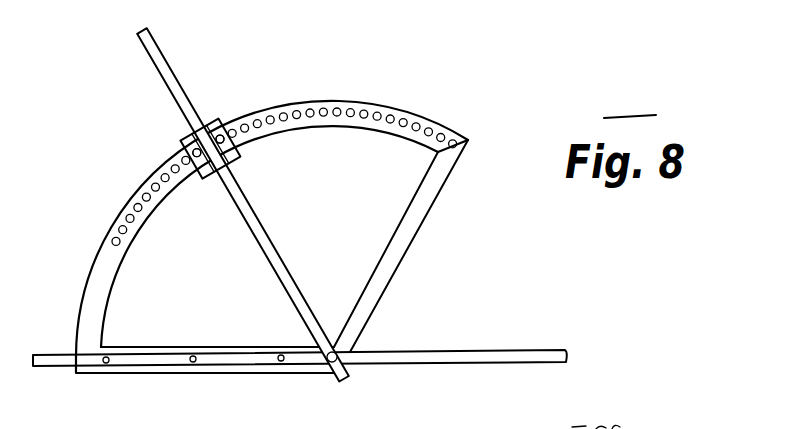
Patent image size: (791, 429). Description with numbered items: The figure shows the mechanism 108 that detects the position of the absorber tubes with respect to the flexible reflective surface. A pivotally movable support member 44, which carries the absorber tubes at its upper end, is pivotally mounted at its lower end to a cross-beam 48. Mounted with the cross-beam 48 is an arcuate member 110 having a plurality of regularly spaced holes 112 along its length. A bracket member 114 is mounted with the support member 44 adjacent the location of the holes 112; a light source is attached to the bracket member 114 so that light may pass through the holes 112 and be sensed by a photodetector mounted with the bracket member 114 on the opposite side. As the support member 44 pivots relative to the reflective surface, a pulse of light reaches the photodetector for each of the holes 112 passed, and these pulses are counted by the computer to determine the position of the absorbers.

The support member 44 is at (266, 233).
The cross-beam 48 is at (435, 351).
The mechanism 108 is at (234, 382).
The arcuate member 110 is at (340, 101).
The holes 112 is at (282, 113).
The bracket member 114 is at (181, 142).